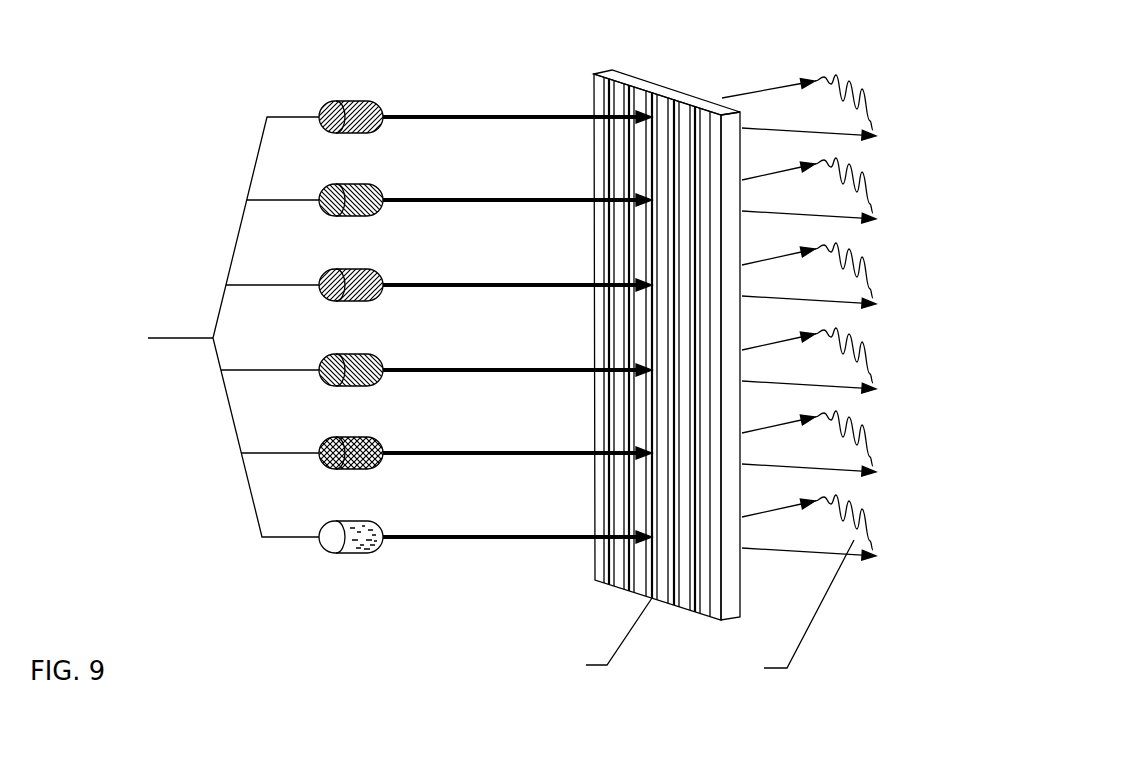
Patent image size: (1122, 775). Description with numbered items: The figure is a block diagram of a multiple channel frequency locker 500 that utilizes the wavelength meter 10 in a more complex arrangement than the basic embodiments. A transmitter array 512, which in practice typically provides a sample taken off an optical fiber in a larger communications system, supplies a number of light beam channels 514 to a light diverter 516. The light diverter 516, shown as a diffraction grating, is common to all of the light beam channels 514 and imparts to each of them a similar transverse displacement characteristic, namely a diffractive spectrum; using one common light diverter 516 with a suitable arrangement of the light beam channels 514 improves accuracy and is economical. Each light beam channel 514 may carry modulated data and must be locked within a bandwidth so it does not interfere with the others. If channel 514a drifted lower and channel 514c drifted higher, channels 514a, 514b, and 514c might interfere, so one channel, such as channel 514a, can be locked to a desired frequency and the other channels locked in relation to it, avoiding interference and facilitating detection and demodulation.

The wavelength meter 10 is at (373, 708).
The multiple channel frequency locker 500 is at (117, 170).
The transmitter array 512 is at (346, 68).
The light beam channels 514 is at (498, 68).
The channel 514a is at (437, 120).
The channel 514b is at (437, 203).
The channel 514c is at (438, 288).
The light diverter 516 is at (661, 88).